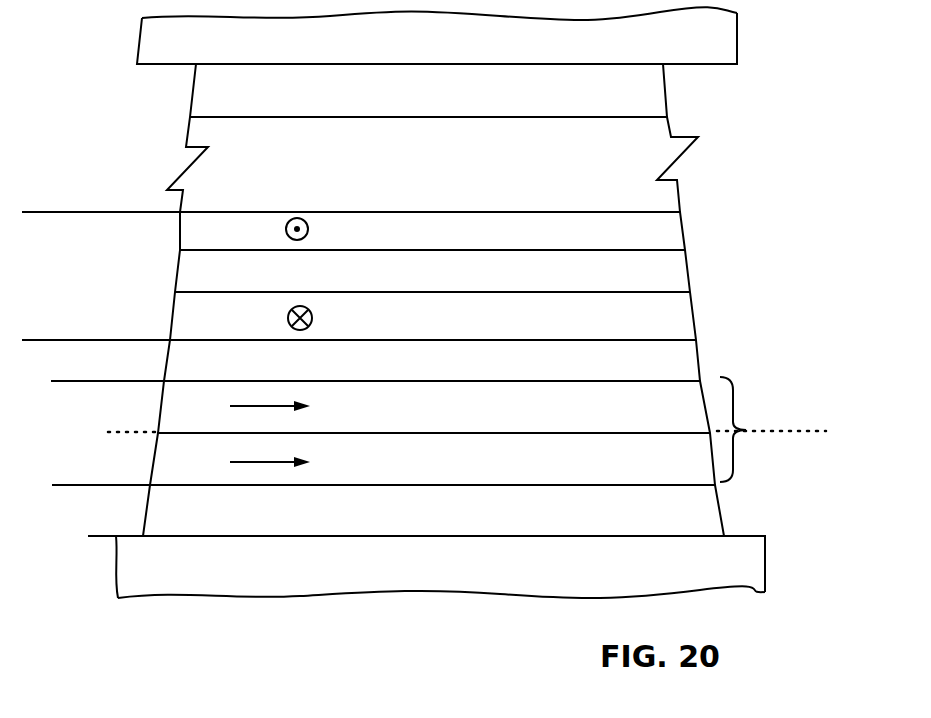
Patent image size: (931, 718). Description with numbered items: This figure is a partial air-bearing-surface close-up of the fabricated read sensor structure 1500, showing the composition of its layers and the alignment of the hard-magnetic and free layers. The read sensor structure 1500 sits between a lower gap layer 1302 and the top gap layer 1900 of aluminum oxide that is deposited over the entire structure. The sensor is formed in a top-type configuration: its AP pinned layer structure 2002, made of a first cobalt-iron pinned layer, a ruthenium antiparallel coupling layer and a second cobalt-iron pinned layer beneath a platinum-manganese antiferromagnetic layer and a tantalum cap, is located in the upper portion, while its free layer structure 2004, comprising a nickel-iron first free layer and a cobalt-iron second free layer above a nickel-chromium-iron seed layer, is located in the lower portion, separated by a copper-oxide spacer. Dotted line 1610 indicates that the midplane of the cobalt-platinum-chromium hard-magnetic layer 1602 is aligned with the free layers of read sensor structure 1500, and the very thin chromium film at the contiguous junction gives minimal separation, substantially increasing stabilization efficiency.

The top gap layer 1900 is at (725, 34).
The first shield layer G1 1302 is at (727, 563).
The read sensor structure 1500 is at (77, 64).
The free layer structure 2004 is at (63, 398).
The AP pinned layer structure 2002 is at (37, 229).
The dotted line 1610 is at (765, 428).
The Co-Pt-Cr hard-magnetic layer 1602 is at (798, 444).